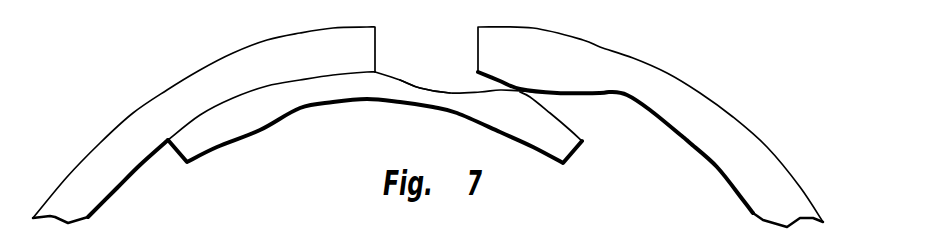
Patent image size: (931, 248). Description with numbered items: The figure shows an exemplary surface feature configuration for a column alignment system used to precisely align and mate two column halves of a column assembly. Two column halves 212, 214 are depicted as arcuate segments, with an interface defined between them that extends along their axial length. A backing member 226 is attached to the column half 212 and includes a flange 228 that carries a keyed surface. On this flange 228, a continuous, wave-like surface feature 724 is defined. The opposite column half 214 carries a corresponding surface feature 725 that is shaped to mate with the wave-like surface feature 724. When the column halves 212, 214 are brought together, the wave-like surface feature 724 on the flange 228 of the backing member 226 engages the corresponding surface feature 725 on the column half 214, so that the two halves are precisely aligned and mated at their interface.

The column half 212 is at (198, 97).
The column half 214 is at (742, 143).
The backing member 226 is at (237, 160).
The flange 228 is at (463, 103).
The wave-like surface feature 724 is at (421, 88).
The corresponding surface feature 725 is at (556, 94).